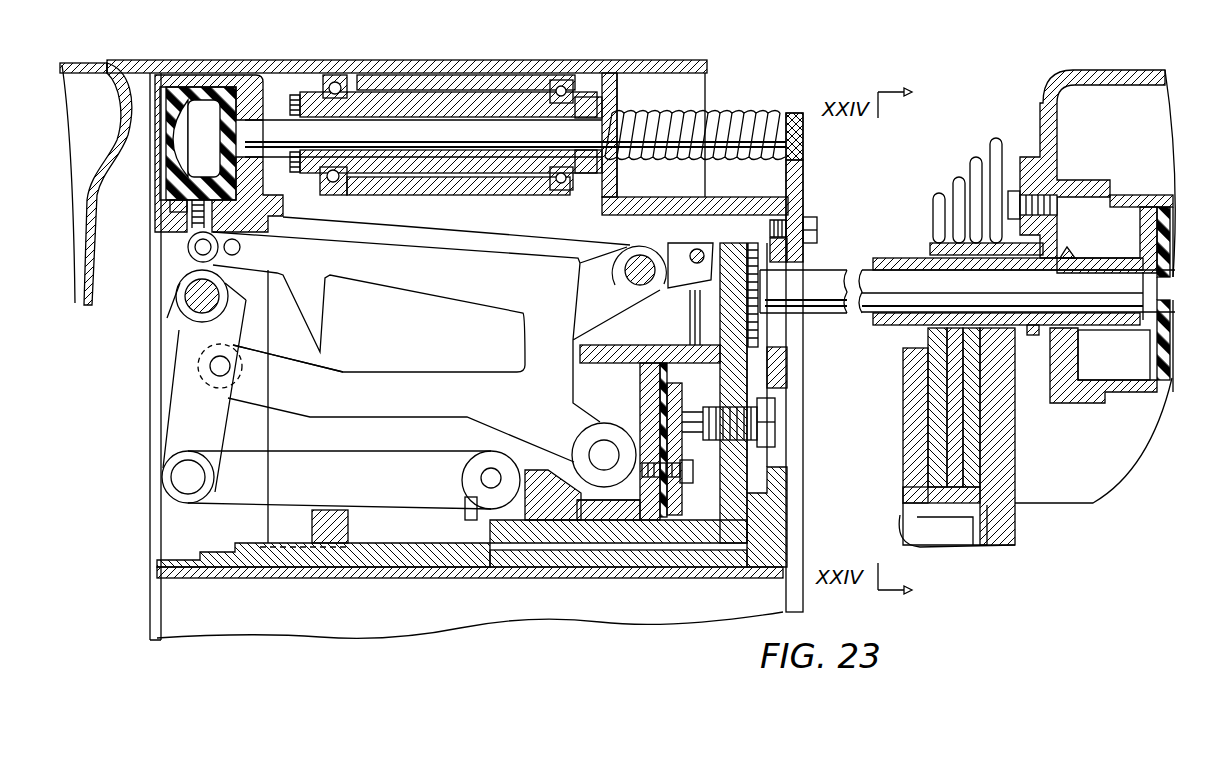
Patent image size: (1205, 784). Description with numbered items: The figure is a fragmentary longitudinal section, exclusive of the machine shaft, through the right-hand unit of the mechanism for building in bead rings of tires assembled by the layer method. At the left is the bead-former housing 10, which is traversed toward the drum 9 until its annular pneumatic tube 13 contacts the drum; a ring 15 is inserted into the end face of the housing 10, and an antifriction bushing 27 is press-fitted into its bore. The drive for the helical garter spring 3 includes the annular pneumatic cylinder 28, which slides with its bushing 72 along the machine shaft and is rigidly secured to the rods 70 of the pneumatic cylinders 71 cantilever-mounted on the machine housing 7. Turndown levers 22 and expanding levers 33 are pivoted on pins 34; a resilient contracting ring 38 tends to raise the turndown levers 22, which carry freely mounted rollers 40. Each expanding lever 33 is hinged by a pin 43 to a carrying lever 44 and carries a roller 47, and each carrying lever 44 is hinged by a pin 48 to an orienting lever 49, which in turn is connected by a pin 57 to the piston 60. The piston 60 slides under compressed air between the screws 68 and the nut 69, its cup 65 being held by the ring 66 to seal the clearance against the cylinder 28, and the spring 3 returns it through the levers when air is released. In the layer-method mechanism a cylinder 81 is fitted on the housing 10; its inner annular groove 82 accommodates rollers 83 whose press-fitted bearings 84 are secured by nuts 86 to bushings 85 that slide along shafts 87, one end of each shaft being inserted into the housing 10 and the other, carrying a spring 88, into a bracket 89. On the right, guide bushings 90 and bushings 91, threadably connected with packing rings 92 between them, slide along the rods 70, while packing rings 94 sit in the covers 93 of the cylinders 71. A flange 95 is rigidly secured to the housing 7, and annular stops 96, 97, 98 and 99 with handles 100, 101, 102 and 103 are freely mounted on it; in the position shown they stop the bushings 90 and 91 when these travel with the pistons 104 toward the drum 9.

The drum 9 is at (100, 62).
The housing 10 is at (246, 74).
The annular pneumatic tube 13 is at (168, 178).
The ring 15 is at (170, 226).
The rollers 40 is at (188, 249).
The helical garter spring 3 is at (176, 296).
The turndown levers 22 is at (412, 290).
The expanding levers 33 is at (384, 372).
The pins 43 is at (228, 372).
The carrying levers 44 is at (222, 413).
The pins 48 is at (186, 494).
The orienting levers 49 is at (238, 492).
The pins 57 is at (480, 478).
The piston 60 is at (536, 460).
The pins 34 is at (630, 256).
The resilient contracting ring 38 is at (700, 250).
The rollers 47 is at (612, 425).
The cup 65 is at (663, 362).
The ring 66 is at (676, 410).
The screws 68 is at (775, 432).
The nut 69 is at (330, 509).
The annular pneumatic cylinder 28 is at (295, 570).
The bushing 72 is at (360, 580).
The bushing 27 is at (600, 575).
The cylinders 81 is at (288, 61).
The annular groove 82 is at (375, 74).
The rollers 83 is at (412, 74).
The bearings 84 is at (333, 74).
The bushings 85 is at (453, 92).
The nuts 86 is at (575, 90).
The shafts 87 is at (278, 150).
The springs 88 is at (726, 112).
The brackets 89 is at (793, 112).
The rods 70 is at (828, 268).
The machine housing 7 is at (1068, 80).
The pneumatic cylinders 71 is at (1168, 196).
The guide bushings 90 is at (1130, 250).
The bushings 91 is at (882, 326).
The packing rings 92 is at (1032, 336).
The covers 93 is at (1070, 404).
The packing rings 94 is at (1076, 252).
The flange 95 is at (905, 410).
The annular stop 96 is at (932, 500).
The annular stop 97 is at (957, 505).
The annular stop 98 is at (970, 452).
The annular stop 99 is at (1002, 472).
The handle 100 is at (938, 200).
The handle 101 is at (958, 180).
The handle 102 is at (975, 160).
The handle 103 is at (994, 140).
The pistons 104 is at (1165, 395).